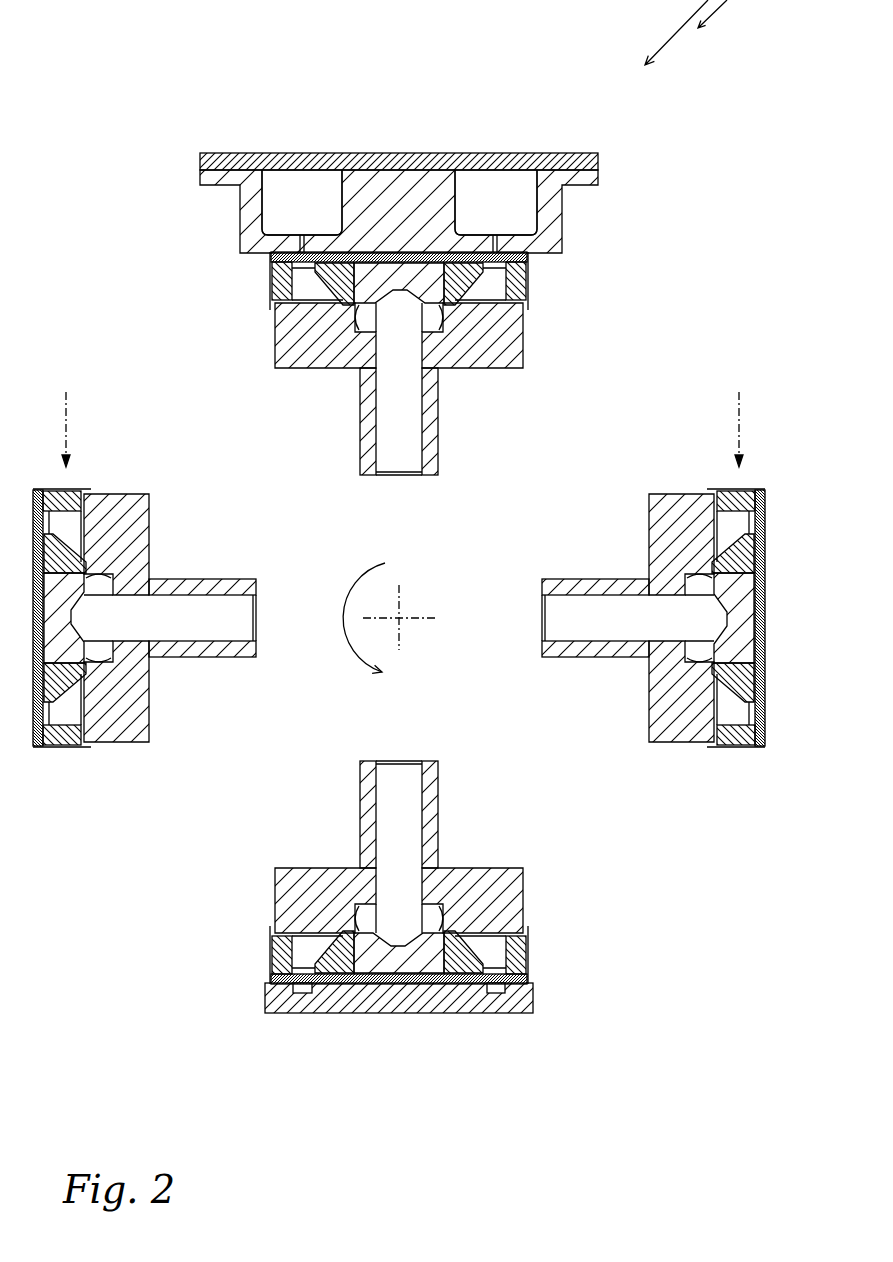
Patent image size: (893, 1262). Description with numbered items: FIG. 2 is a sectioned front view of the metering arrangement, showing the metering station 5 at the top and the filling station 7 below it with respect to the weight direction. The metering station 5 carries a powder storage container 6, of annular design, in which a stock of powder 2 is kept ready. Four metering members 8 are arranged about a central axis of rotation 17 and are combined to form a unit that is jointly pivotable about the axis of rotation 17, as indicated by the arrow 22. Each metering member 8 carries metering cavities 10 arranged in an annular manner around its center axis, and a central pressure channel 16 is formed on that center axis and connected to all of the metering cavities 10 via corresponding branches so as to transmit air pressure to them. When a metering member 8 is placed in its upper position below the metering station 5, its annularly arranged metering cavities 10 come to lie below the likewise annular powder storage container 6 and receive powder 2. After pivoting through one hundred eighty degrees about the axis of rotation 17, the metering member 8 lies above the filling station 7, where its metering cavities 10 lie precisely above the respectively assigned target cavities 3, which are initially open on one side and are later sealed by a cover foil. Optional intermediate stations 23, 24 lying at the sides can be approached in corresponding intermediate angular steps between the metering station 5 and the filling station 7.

The powder 2 is at (294, 208).
The target cavities 3 is at (298, 993).
The metering station 5 is at (338, 211).
The powder storage container 6 is at (502, 178).
The filling station 7 is at (461, 1024).
The metering member 8 is at (360, 422).
The metering cavities 10 is at (270, 287).
The central pressure channel 16 is at (388, 421).
The axis of rotation 17 is at (400, 620).
The arrow 22 is at (347, 640).
The intermediate station 23 is at (63, 418).
The intermediate station 24 is at (737, 418).